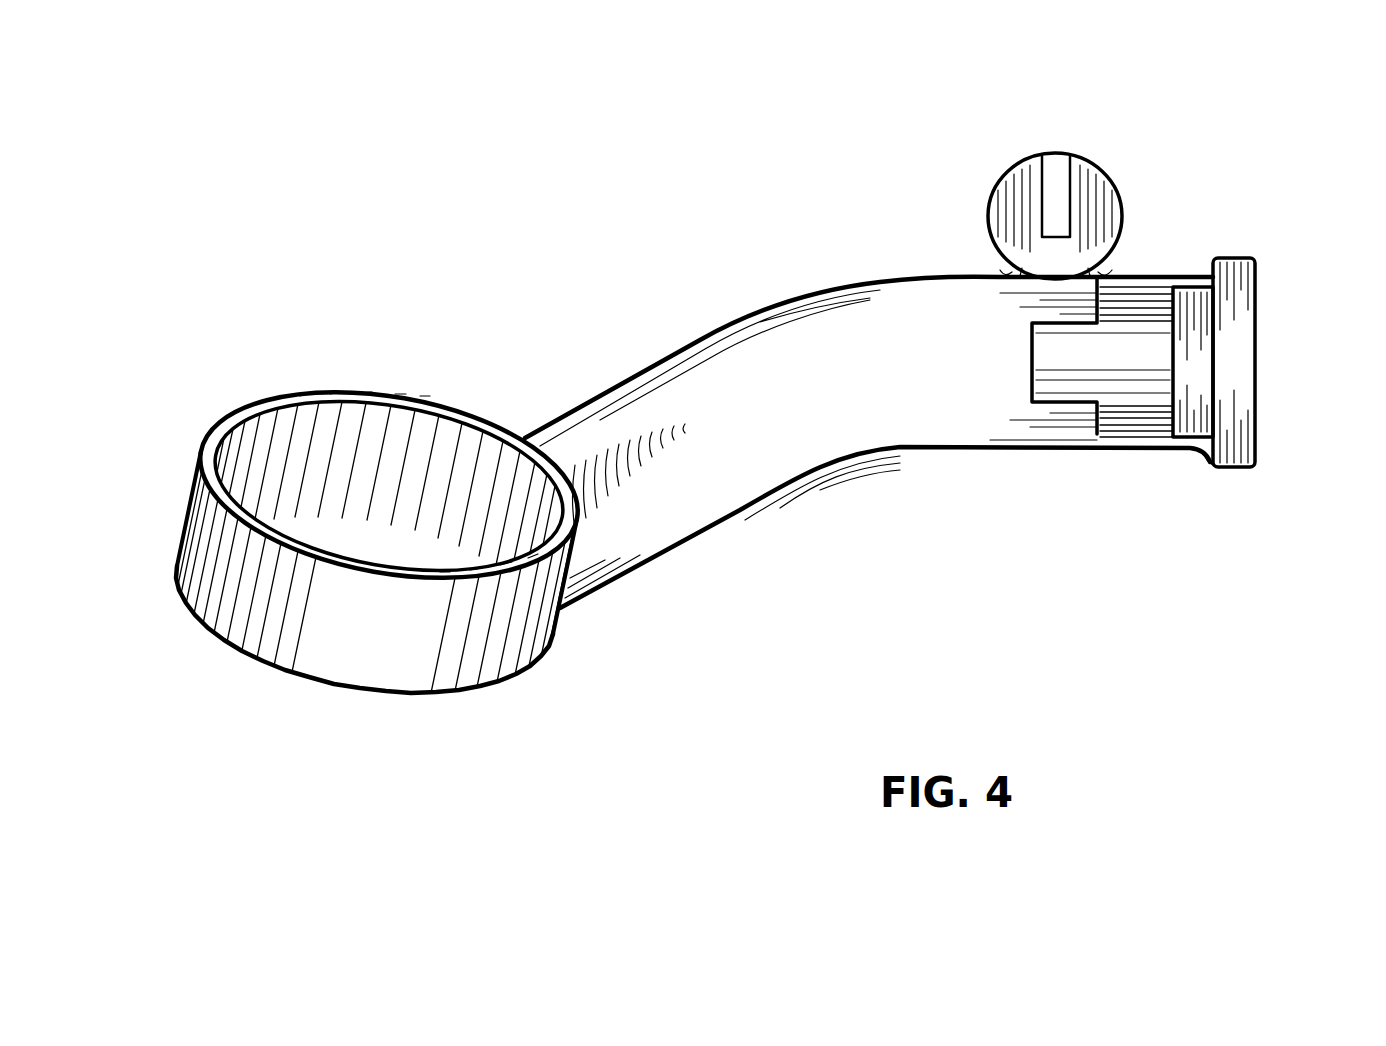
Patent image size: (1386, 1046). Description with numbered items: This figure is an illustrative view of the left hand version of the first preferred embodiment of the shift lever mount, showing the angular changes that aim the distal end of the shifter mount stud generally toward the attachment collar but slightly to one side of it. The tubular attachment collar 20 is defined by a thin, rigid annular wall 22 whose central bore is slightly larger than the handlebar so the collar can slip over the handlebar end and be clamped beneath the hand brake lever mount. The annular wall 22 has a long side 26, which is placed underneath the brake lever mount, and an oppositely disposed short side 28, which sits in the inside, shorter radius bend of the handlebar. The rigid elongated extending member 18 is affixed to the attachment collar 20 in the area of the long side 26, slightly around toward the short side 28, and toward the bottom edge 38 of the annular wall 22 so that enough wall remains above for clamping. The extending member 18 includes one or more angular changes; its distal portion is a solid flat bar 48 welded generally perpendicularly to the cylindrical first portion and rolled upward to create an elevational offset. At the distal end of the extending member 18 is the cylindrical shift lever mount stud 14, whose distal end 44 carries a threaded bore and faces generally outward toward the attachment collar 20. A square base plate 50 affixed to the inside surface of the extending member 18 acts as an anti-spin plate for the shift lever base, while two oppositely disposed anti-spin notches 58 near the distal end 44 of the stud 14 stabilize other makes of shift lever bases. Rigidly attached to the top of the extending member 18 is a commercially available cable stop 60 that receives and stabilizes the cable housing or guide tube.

The shift lever mount stud 14 is at (1137, 445).
The extending member 18 is at (750, 313).
The attachment collar 20 is at (530, 682).
The annular wall 22 is at (417, 657).
The long side 26 is at (448, 410).
The short side 28 is at (303, 637).
The bottom edge 38 is at (233, 638).
The distal end 44 is at (1032, 370).
The flat bar 48 is at (1255, 350).
The square base plate 50 is at (1193, 452).
The anti-spin notches 58 is at (1100, 292).
The cable stop 60 is at (1108, 178).